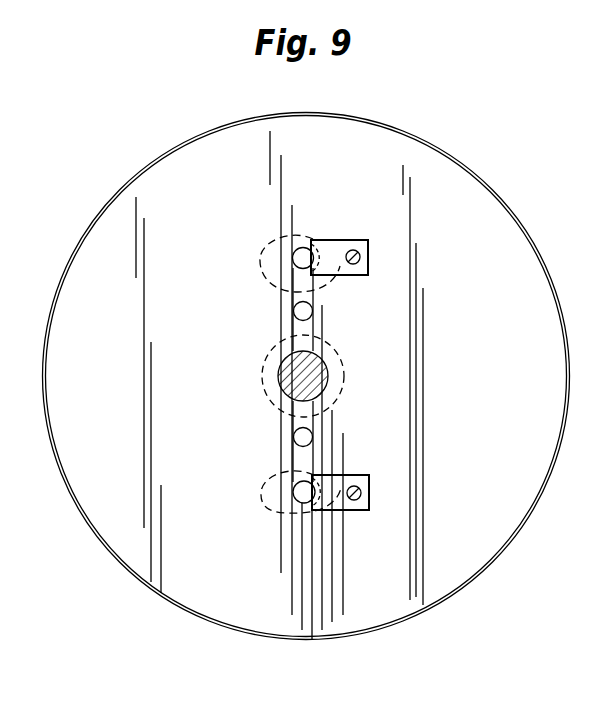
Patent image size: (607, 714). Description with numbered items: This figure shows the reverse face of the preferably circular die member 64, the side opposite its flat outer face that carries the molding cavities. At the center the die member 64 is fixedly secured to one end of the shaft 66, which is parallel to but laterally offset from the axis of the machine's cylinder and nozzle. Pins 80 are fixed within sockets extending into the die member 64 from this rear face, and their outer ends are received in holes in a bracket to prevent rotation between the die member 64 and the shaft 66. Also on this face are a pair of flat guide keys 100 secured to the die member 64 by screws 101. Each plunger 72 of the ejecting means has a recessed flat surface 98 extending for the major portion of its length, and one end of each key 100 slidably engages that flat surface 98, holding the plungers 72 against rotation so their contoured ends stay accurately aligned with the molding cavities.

The die member 64 is at (318, 376).
The shaft 66 is at (275, 376).
The plunger 72 is at (277, 376).
The pin 80 is at (340, 374).
The recessed flat surface 98 is at (281, 374).
The flat guide key 100 is at (363, 357).
The screw 101 is at (408, 389).